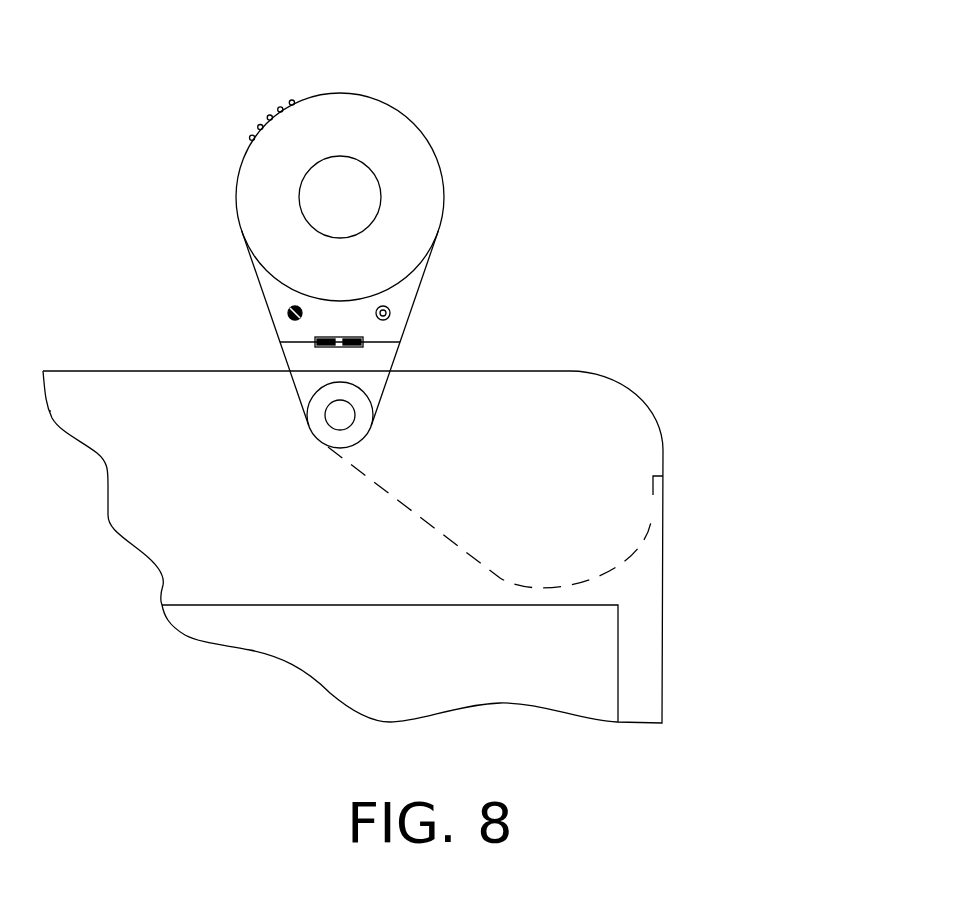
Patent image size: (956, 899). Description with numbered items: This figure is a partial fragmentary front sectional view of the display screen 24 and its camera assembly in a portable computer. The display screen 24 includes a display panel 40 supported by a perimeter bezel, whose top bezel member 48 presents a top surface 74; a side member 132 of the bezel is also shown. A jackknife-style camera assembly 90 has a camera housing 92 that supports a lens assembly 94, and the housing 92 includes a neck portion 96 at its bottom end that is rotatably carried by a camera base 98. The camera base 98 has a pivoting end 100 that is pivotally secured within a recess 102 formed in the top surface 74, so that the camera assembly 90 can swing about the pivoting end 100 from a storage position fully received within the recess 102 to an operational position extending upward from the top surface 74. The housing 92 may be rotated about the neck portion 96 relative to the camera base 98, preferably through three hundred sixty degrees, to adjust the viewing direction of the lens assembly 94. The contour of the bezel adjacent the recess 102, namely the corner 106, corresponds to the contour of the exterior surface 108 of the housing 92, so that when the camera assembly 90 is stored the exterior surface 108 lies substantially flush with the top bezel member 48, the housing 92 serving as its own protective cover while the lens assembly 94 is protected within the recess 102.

The display screen 24 is at (690, 667).
The display panel 40 is at (482, 677).
The top bezel member 48 is at (238, 513).
The top surface 74 is at (66, 369).
The jackknife-style camera assembly 90 is at (460, 197).
The camera housing 92 is at (315, 93).
The lens assembly 94 is at (355, 192).
The neck portion 96 is at (305, 340).
The camera base 98 is at (323, 372).
The pivoting end 100 is at (340, 416).
The recess 102 is at (590, 440).
The corner 106 is at (613, 383).
The exterior surface 108 is at (268, 117).
The side member 132 is at (638, 623).